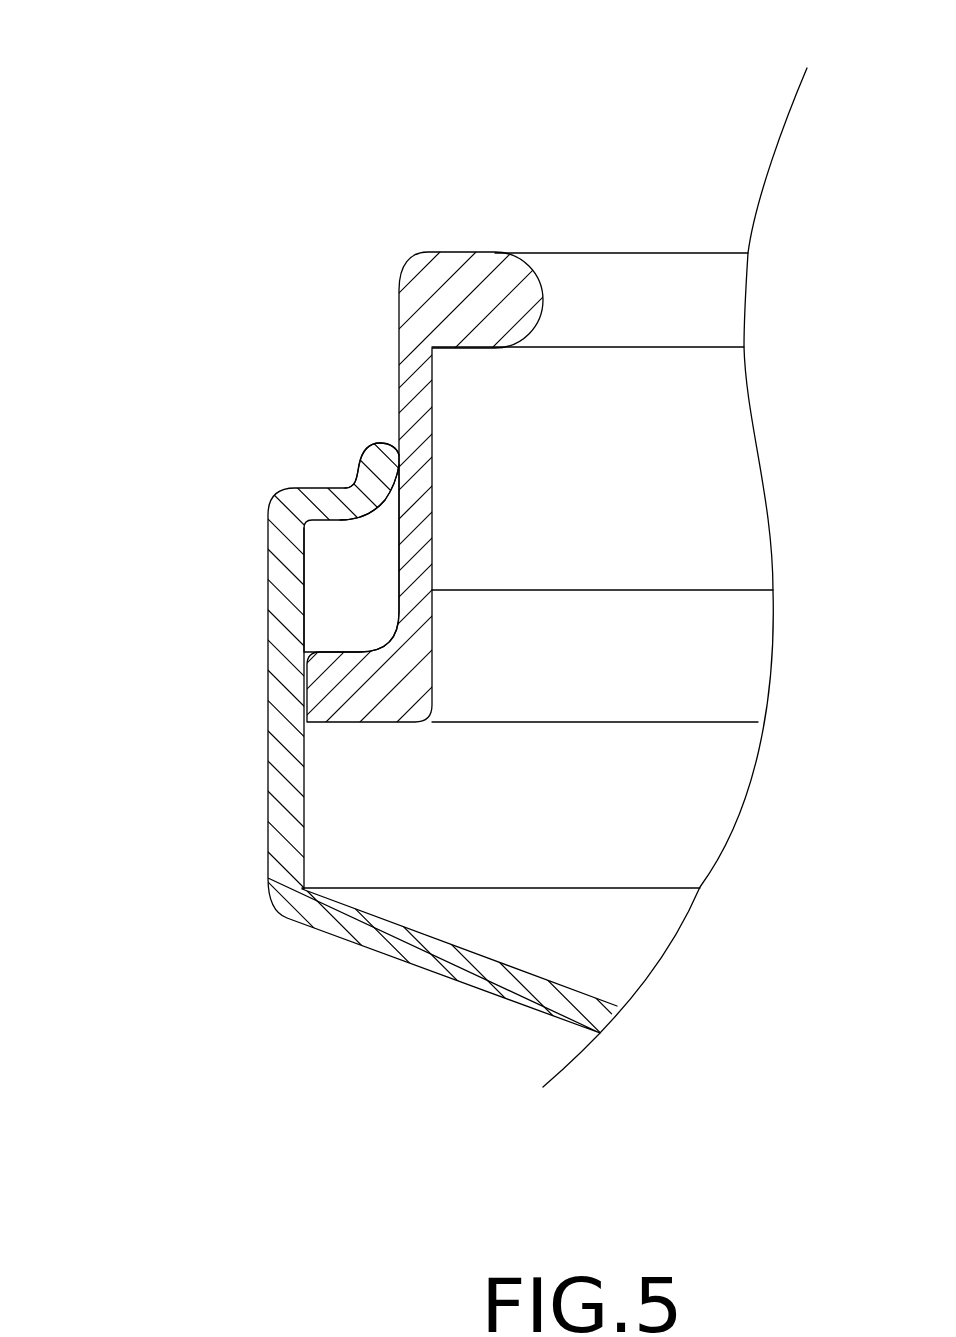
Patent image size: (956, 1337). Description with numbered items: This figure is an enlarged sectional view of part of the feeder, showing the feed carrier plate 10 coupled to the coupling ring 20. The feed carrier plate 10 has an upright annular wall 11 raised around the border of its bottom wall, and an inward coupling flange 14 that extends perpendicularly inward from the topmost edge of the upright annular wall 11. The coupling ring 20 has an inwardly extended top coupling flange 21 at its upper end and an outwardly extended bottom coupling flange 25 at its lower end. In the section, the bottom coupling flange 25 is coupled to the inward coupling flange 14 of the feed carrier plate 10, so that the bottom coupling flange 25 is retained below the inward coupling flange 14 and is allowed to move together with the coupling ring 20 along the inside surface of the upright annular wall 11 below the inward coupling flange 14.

The feed carrier plate 10 is at (478, 765).
The upright annular wall 11 is at (277, 603).
The inward coupling flange 14 is at (373, 473).
The coupling ring 20 is at (573, 230).
The top coupling flange 21 is at (483, 283).
The bottom coupling flange 25 is at (338, 687).